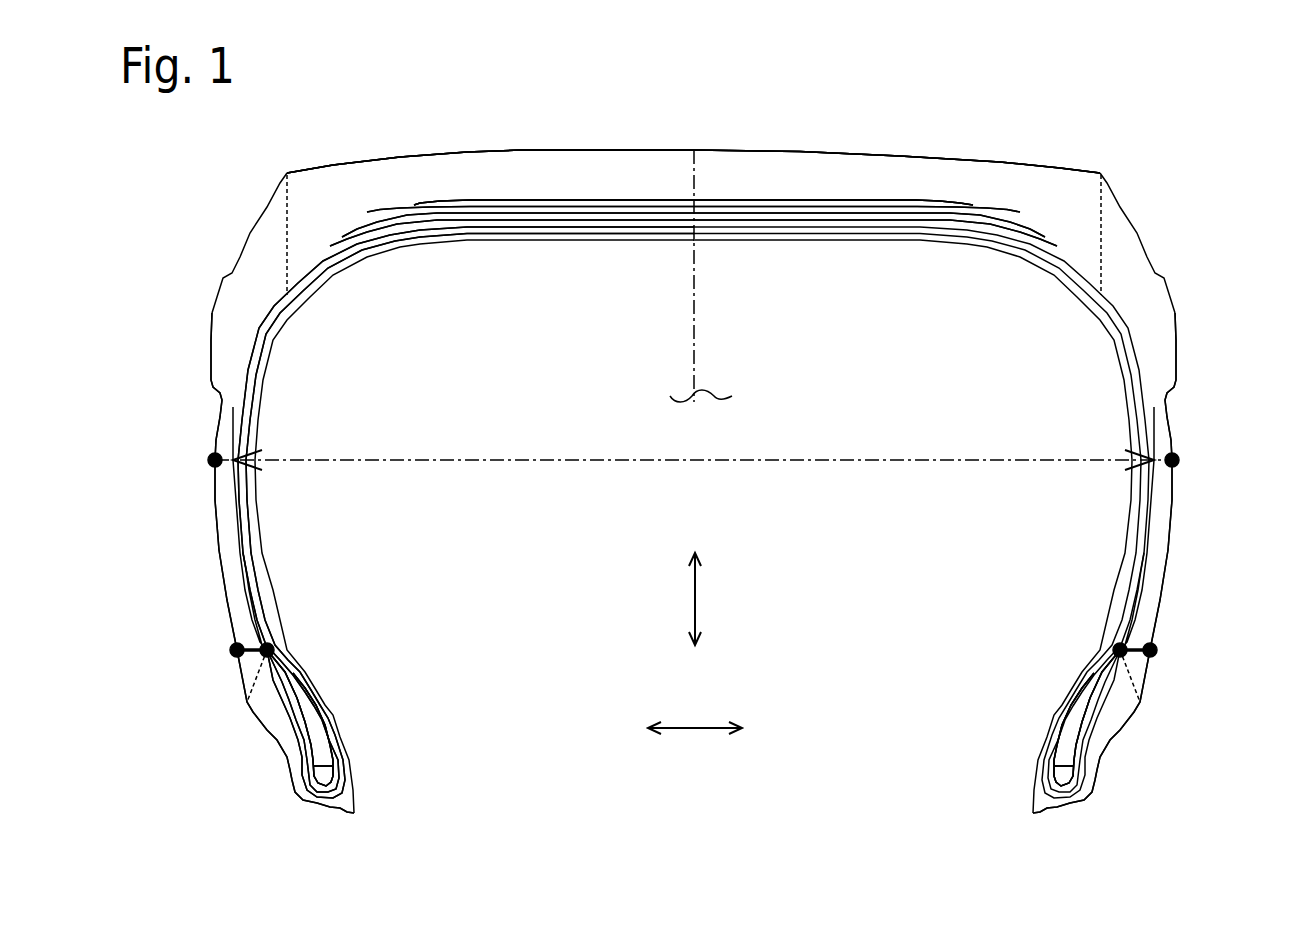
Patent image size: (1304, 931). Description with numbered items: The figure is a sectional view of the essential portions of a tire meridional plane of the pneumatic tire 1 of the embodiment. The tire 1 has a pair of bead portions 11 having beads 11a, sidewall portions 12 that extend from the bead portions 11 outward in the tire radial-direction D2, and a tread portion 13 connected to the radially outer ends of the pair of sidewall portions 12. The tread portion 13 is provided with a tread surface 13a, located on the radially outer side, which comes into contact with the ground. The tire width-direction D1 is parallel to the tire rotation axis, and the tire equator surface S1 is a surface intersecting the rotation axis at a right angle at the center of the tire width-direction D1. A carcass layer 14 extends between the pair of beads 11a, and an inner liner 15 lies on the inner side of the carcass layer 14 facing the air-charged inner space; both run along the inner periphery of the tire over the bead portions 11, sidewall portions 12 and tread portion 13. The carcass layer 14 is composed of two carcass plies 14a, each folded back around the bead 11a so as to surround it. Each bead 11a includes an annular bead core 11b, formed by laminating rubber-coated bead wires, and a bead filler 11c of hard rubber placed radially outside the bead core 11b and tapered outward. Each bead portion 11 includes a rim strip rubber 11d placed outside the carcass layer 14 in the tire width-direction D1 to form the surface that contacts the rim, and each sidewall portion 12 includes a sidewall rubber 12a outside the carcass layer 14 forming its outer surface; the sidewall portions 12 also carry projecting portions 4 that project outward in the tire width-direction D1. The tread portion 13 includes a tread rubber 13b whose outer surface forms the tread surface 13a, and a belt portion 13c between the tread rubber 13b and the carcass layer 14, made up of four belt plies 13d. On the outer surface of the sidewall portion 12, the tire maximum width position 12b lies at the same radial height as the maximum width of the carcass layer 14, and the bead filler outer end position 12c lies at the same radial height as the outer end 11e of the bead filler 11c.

The pneumatic tire 1 is at (1199, 88).
The projecting portion 4 is at (693, 243).
The bead portion 11 is at (695, 742).
The bead 11a is at (693, 718).
The bead core 11b is at (693, 718).
The bead filler 11c is at (693, 718).
The rim strip rubber 11d is at (696, 731).
The outer end of the bead filler 11e is at (693, 632).
The sidewall portion 12 is at (697, 481).
The sidewall rubber 12a is at (696, 481).
The tire maximum width position 12b is at (697, 465).
The bead filler outer end position 12c is at (695, 655).
The tread portion 13 is at (748, 121).
The tread surface 13a is at (510, 150).
The tread rubber 13b is at (627, 178).
The belt portion 13c is at (874, 197).
The belt ply 13d is at (918, 224).
The carcass layer 14 is at (568, 238).
The carcass ply 14a is at (300, 303).
The inner liner 15 is at (762, 243).
The tire equator surface S1 is at (694, 372).
The tire width-direction D1 is at (695, 739).
The tire radial-direction D2 is at (708, 599).